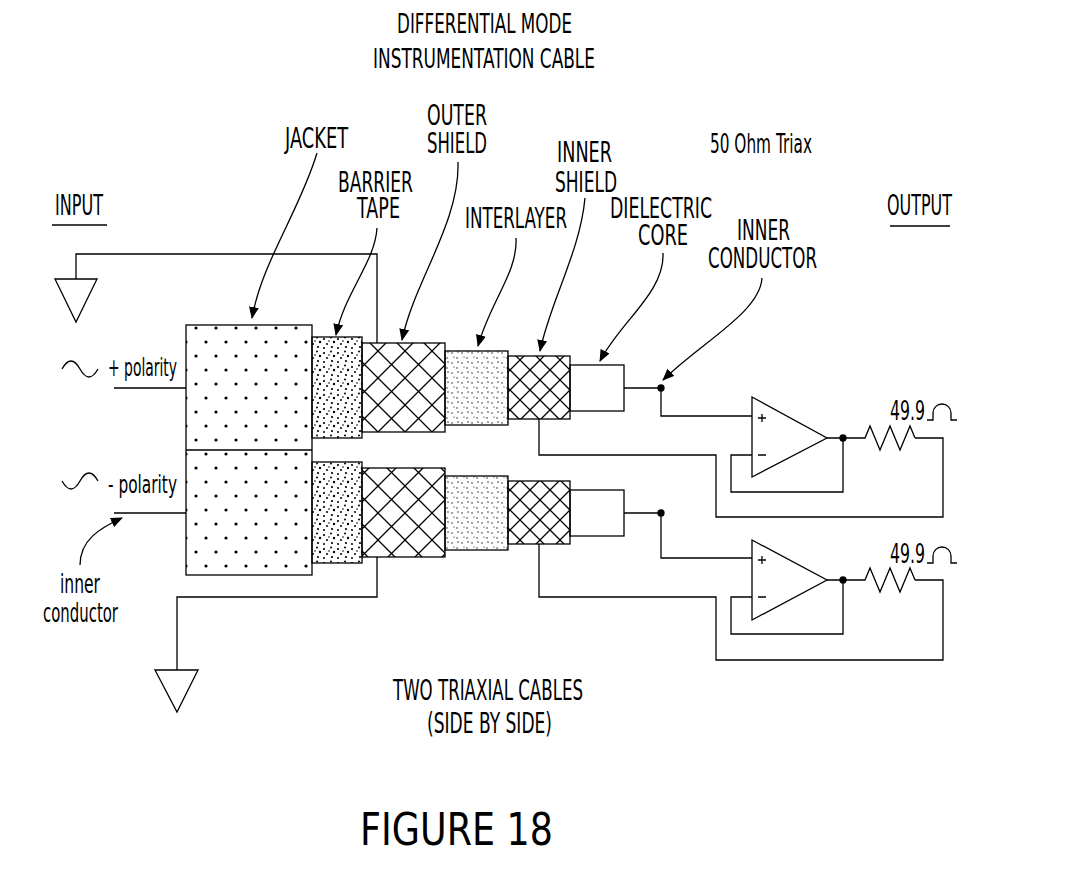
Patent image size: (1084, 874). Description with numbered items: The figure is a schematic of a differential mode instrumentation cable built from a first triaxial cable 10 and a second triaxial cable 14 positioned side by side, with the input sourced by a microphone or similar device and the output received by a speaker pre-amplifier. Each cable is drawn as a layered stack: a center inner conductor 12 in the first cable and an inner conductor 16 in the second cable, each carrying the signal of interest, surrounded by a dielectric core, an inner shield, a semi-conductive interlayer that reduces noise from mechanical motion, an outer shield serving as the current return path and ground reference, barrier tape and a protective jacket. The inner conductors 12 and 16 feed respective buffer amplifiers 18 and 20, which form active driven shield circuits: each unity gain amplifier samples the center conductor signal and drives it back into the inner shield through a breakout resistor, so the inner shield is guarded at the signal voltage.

The first triaxial cable 10 is at (197, 333).
The inner conductor 12 is at (137, 389).
The second triaxial cable 14 is at (193, 566).
The inner conductor 16 is at (137, 514).
The buffer amplifier 18 is at (785, 415).
The buffer amplifier 20 is at (785, 558).